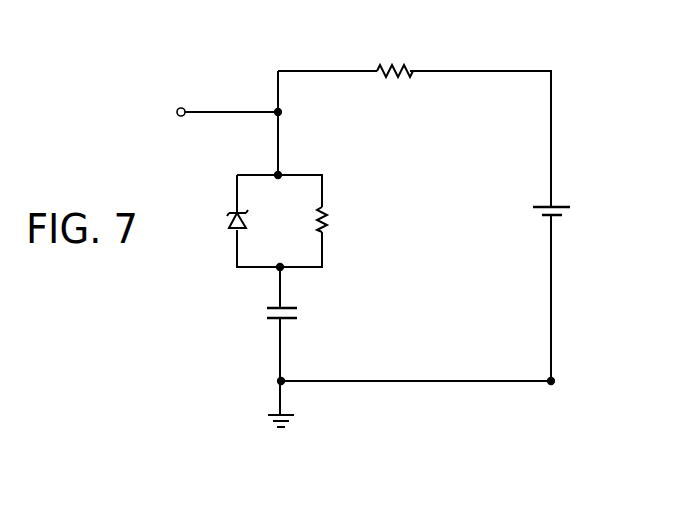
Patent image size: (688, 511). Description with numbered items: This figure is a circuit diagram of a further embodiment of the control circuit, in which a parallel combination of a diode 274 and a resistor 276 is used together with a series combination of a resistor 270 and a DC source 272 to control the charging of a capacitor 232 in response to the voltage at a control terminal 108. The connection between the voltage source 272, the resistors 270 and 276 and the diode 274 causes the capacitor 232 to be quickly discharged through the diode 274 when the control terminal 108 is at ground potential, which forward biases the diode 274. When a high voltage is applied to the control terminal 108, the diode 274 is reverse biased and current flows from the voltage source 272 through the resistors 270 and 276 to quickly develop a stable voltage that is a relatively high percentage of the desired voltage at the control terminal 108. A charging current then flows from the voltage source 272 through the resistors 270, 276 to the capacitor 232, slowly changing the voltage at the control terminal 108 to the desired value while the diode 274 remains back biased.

The control terminal 108 is at (180, 107).
The resistor 270 is at (389, 66).
The DC source 272 is at (572, 212).
The diode 274 is at (231, 223).
The resistor 276 is at (333, 227).
The capacitor 232 is at (266, 313).